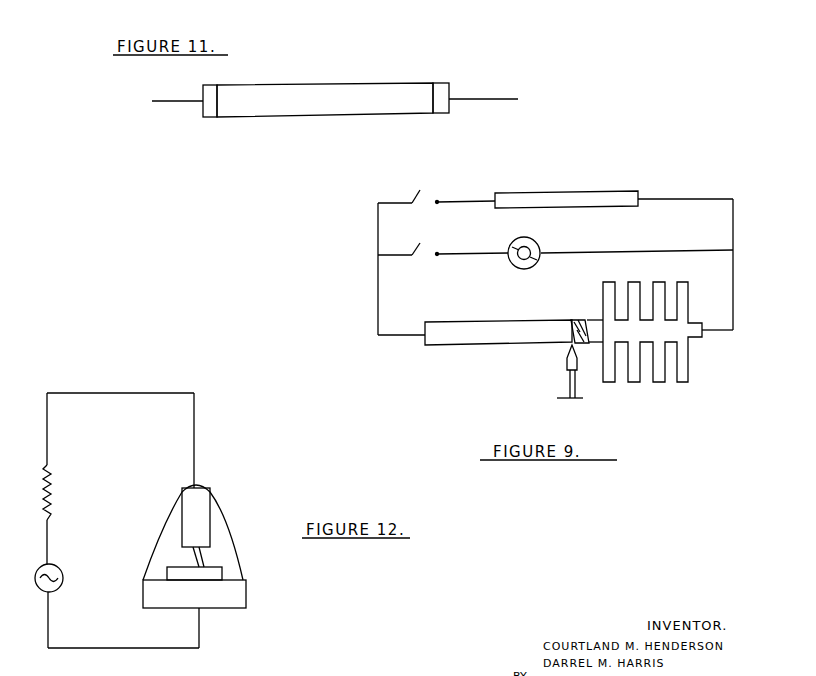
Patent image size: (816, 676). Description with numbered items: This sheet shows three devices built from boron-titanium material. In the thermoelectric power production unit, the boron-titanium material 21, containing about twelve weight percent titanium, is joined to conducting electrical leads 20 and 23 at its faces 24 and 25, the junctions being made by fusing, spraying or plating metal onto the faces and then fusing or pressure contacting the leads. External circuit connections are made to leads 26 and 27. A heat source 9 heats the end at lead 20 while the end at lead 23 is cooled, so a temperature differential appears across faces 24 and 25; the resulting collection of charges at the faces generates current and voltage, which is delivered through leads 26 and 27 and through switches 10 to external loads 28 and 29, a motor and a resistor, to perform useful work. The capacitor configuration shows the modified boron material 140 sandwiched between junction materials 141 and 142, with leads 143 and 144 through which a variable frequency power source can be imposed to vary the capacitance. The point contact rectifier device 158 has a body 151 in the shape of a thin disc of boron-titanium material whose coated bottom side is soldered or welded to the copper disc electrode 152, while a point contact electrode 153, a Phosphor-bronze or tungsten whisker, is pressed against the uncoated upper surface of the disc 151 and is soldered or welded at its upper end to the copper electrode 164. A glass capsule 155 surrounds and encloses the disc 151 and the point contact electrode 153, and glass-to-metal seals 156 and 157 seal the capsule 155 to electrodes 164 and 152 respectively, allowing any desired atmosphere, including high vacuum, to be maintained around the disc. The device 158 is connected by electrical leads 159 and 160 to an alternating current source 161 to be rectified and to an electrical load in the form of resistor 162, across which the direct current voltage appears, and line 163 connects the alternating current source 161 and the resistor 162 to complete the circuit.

In FIG. 11, the modified boron material 140 is at (325, 100).
In FIG. 11, the junction material 141 is at (210, 118).
In FIG. 11, the junction material 142 is at (448, 82).
In FIG. 11, the lead 143 is at (177, 100).
In FIG. 11, the lead 144 is at (482, 108).
In FIG. 9, the lead 27 is at (378, 304).
In FIG. 9, the lead 26 is at (733, 281).
In FIG. 9, the switches 10 is at (460, 203).
In FIG. 9, the external load 29 is at (566, 200).
In FIG. 9, the external load 28 is at (550, 246).
In FIG. 9, the conducting electrical lead 20 is at (505, 335).
In FIG. 9, the face 24 is at (572, 327).
In FIG. 9, the face 25 is at (583, 323).
In FIG. 9, the boron-titanium material 21 is at (583, 343).
In FIG. 9, the conducting electrical lead 23 is at (684, 338).
In FIG. 9, the heat source 9 is at (558, 370).
In FIG. 12, the electrical lead 159 is at (110, 393).
In FIG. 12, the resistor 162 is at (53, 489).
In FIG. 12, the line 163 is at (50, 543).
In FIG. 12, the alternating current source 161 is at (37, 572).
In FIG. 12, the electrical lead 160 is at (144, 650).
In FIG. 12, the disc electrode 152 is at (158, 597).
In FIG. 12, the glass-to-metal seal 157 is at (148, 582).
In FIG. 12, the body 151 is at (208, 573).
In FIG. 12, the point contact electrode 153 is at (197, 558).
In FIG. 12, the glass-to-metal seal 156 is at (182, 495).
In FIG. 12, the electrode 164 is at (196, 508).
In FIG. 12, the point contact rectifier device 158 is at (233, 527).
In FIG. 12, the glass capsule 155 is at (238, 566).